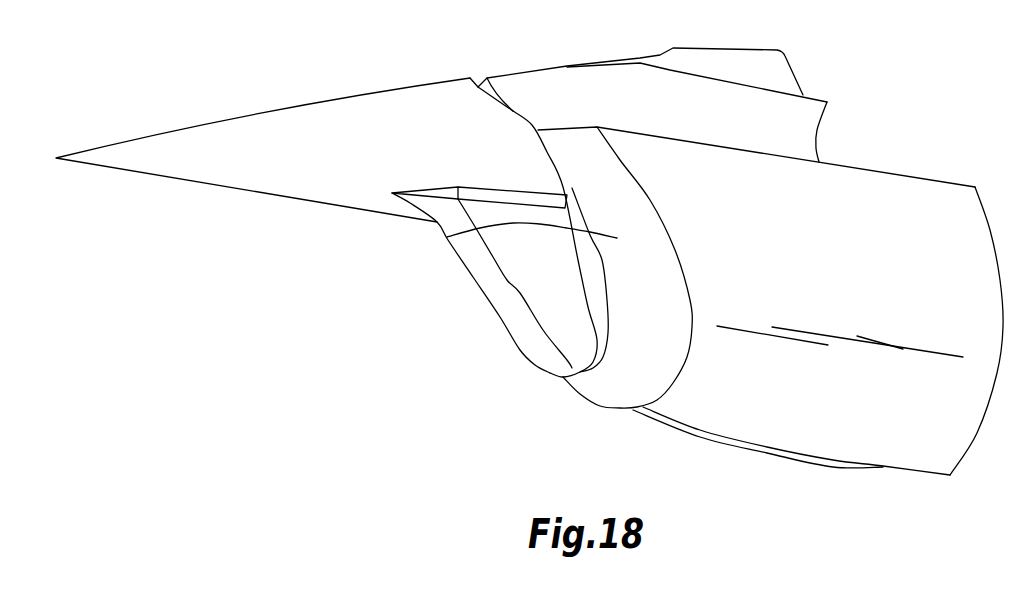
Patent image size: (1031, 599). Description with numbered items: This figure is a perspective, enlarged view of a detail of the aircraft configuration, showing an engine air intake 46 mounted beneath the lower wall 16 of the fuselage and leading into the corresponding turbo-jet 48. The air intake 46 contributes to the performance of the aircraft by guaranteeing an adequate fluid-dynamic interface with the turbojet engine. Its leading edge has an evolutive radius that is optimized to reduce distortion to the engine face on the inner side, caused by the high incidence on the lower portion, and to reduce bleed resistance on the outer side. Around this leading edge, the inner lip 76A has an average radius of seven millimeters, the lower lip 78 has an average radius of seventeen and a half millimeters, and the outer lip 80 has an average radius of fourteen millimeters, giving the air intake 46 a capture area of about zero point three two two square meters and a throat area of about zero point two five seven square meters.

The lower wall 16 is at (204, 166).
The outer lip 80 is at (447, 237).
The inner lip 76A is at (490, 257).
The air intake 46 is at (555, 308).
The lower lip 78 is at (555, 378).
The turbo-jet 48 is at (765, 413).